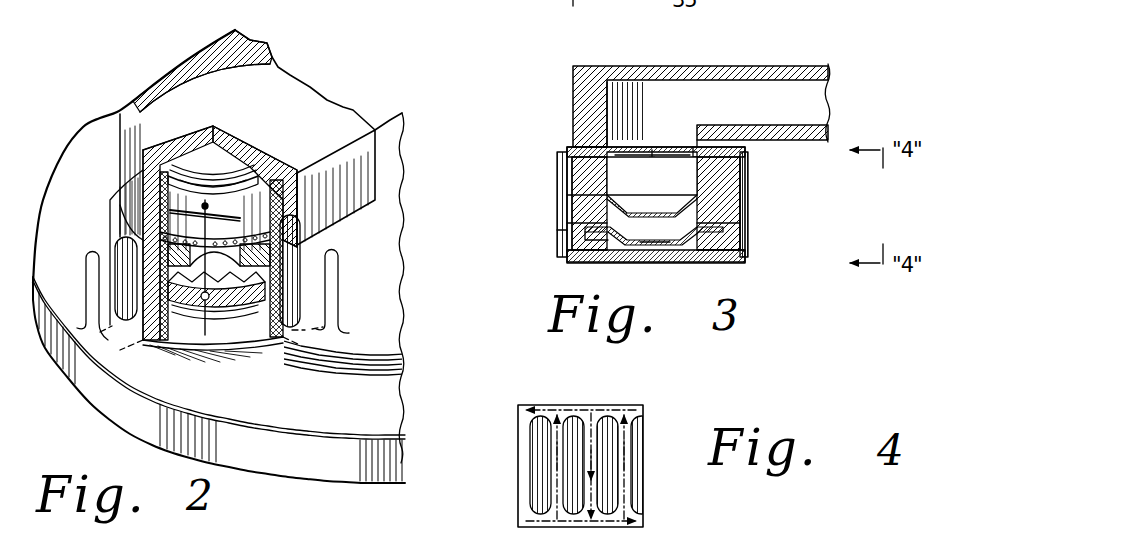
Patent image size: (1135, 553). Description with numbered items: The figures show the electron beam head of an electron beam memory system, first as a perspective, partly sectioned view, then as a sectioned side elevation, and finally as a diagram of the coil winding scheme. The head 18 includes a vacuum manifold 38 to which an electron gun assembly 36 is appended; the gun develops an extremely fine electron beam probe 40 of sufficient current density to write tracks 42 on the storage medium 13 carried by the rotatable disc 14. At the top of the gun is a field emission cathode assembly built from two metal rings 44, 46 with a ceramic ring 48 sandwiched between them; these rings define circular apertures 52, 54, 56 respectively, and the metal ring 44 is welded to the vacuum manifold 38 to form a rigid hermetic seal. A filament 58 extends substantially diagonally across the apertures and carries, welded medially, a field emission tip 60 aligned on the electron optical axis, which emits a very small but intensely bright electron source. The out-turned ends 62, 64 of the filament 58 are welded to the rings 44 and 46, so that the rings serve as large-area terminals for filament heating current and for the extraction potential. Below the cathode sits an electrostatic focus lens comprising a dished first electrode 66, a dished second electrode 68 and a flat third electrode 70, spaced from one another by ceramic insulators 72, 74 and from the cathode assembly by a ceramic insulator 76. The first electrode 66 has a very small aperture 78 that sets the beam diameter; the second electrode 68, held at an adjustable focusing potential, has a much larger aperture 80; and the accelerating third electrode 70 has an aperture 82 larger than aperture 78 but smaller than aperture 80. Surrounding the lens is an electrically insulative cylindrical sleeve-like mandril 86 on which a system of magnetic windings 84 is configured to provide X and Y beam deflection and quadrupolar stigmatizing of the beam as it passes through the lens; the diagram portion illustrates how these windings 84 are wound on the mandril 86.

In FIG. 2, the storage medium 13 is at (219, 358).
In FIG. 2, the rotatable disc 14 is at (219, 380).
In FIG. 2, the turntable body 18 is at (108, 84).
In FIG. 2, the electron gun assembly 36 is at (172, 338).
In FIG. 2, the vacuum manifold 38 is at (265, 185).
In FIG. 3, the vacuum manifold 38 is at (770, 80).
In FIG. 2, the electron beam probe 40 is at (233, 340).
In FIG. 2, the tracks 42 is at (360, 358).
In FIG. 2, the metal ring 44 is at (213, 261).
In FIG. 3, the metal ring 44 is at (575, 135).
In FIG. 3, the metal ring 46 is at (560, 165).
In FIG. 3, the ceramic ring 48 is at (560, 151).
In FIG. 2, the circular aperture 52 is at (216, 195).
In FIG. 2, the circular aperture 54 is at (205, 188).
In FIG. 2, the circular aperture 56 is at (185, 178).
In FIG. 2, the filament 58 is at (245, 200).
In FIG. 3, the filament 58 is at (612, 142).
In FIG. 2, the field emission tip 60 is at (205, 186).
In FIG. 3, the field emission tip 60 is at (653, 150).
In FIG. 3, the out-turned end 62 is at (690, 140).
In FIG. 3, the out-turned end 64 is at (652, 176).
In FIG. 3, the first electrode 66 is at (583, 212).
In FIG. 3, the second electrode 68 is at (720, 262).
In FIG. 3, the third electrode 70 is at (612, 264).
In FIG. 3, the ceramic insulator 72 is at (580, 236).
In FIG. 3, the ceramic insulator 74 is at (563, 255).
In FIG. 3, the ceramic insulator 76 is at (587, 190).
In FIG. 3, the aperture 78 is at (740, 200).
In FIG. 3, the aperture 80 is at (690, 250).
In FIG. 3, the aperture 82 is at (658, 250).
In FIG. 2, the magnetic windings 84 is at (82, 276).
In FIG. 4, the magnetic windings 84 is at (655, 420).
In FIG. 2, the mandril 86 is at (110, 197).
In FIG. 3, the mandril 86 is at (745, 170).
In FIG. 4, the mandril 86 is at (527, 447).